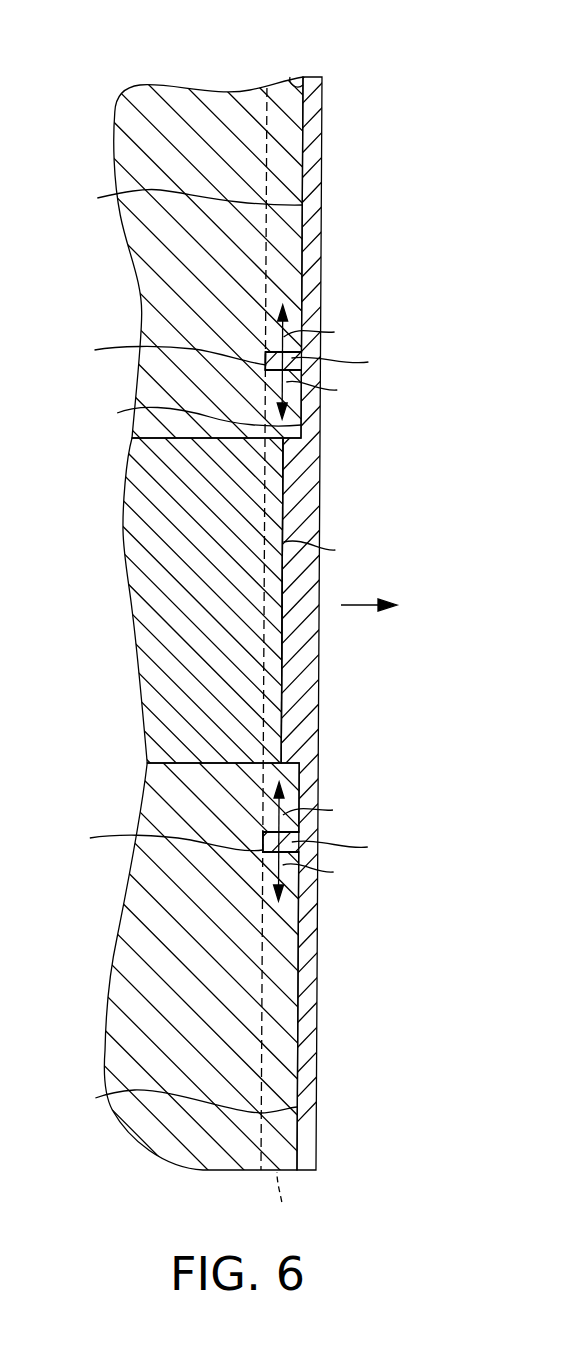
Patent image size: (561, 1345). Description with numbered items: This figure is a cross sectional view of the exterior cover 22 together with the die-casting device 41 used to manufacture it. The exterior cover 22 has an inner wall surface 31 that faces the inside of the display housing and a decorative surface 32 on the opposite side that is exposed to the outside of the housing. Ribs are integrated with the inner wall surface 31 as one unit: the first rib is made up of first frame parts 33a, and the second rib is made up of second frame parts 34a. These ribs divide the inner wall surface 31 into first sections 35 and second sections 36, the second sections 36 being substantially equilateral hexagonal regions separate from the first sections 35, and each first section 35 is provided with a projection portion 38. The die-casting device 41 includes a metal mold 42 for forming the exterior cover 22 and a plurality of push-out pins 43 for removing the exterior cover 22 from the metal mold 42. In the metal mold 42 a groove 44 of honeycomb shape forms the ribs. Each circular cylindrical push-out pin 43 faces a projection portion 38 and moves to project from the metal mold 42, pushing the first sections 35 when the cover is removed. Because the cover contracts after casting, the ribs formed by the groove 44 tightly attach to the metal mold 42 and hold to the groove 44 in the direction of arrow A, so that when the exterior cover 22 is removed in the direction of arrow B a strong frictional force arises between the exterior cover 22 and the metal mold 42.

The exterior cover 22 is at (323, 107).
The inner wall surface 31 is at (294, 78).
The decorative surface 32 is at (323, 132).
The first frame part 33a is at (336, 604).
The second frame part 34a is at (266, 87).
The first section 35 is at (194, 412).
The second section 36 is at (186, 649).
The projection portion 38 is at (321, 600).
The die-casting device 41 is at (120, 99).
The metal mold 42 is at (153, 98).
The push-out pin 43 is at (150, 572).
The groove 44 is at (182, 596).
The arrow A is at (315, 603).
The arrow B is at (363, 606).